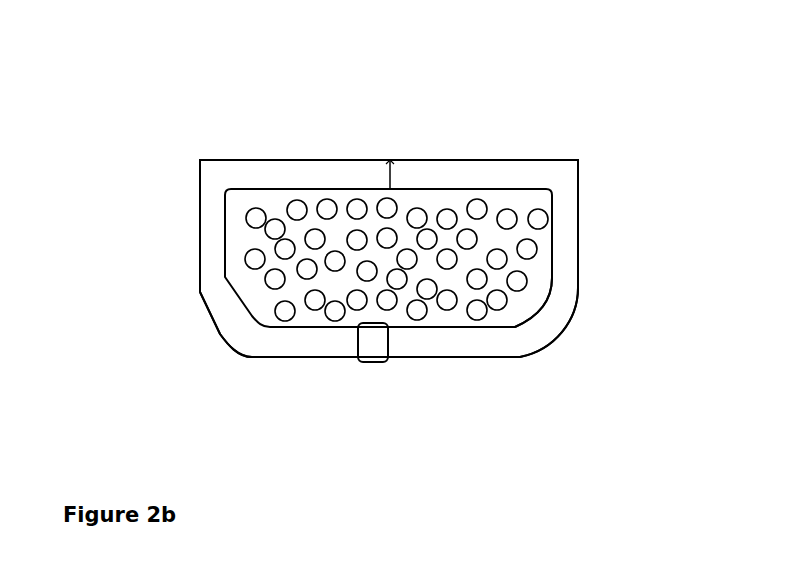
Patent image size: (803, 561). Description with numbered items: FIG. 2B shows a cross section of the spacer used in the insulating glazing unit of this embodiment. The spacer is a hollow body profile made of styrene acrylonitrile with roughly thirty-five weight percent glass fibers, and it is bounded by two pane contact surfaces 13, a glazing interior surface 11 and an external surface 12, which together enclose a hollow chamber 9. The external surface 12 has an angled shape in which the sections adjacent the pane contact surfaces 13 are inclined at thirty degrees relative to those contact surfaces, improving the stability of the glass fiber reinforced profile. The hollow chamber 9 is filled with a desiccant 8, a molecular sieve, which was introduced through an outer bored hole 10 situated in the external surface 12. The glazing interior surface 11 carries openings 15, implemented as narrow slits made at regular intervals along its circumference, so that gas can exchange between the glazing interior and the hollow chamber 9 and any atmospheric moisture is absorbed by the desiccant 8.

The desiccant 8 is at (517, 281).
The hollow chamber 9 is at (518, 309).
The outer bored hole 10 is at (372, 346).
The glazing interior surface 11 is at (557, 160).
The external surface 12 is at (218, 316).
The pane contact surfaces 13 is at (200, 208).
The openings 15 is at (388, 160).